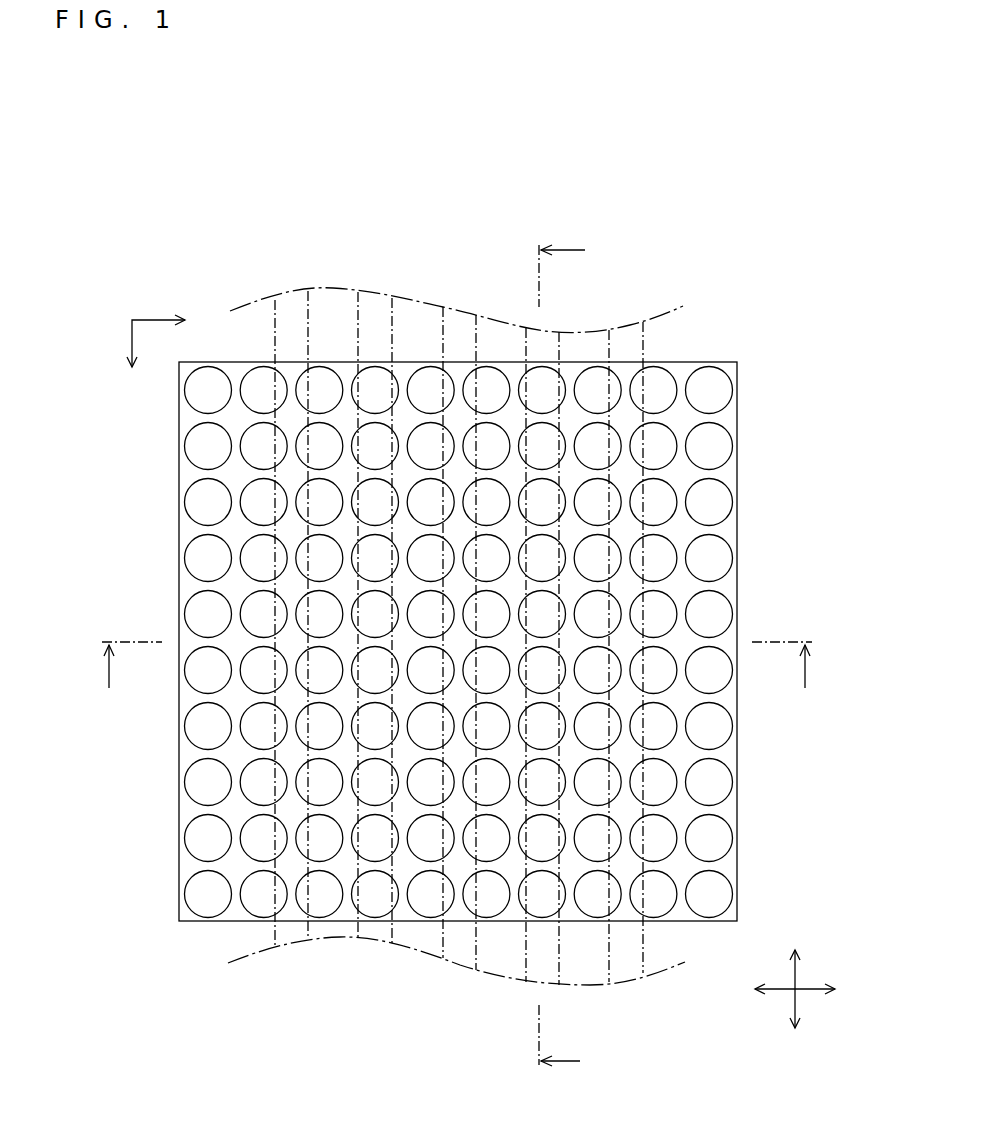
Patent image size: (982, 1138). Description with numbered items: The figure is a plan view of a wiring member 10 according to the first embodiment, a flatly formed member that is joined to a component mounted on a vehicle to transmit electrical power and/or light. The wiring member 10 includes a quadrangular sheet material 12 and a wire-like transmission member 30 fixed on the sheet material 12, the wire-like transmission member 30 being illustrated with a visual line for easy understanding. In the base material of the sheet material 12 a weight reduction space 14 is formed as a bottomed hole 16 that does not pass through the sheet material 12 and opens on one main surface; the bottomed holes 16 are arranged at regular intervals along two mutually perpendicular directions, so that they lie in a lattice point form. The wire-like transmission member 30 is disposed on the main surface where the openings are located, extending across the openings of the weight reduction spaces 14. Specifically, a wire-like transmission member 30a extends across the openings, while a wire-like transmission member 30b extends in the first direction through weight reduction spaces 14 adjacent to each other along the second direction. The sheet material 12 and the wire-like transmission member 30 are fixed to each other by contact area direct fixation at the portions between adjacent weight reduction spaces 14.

The wiring member 10 is at (207, 175).
The sheet material 12 is at (740, 402).
The weight reduction space 14 is at (511, 642).
The bottomed hole 16 is at (733, 464).
The wire-like transmission member 30 is at (357, 932).
The wire-like transmission member 30a is at (526, 950).
The wire-like transmission member 30b is at (443, 945).